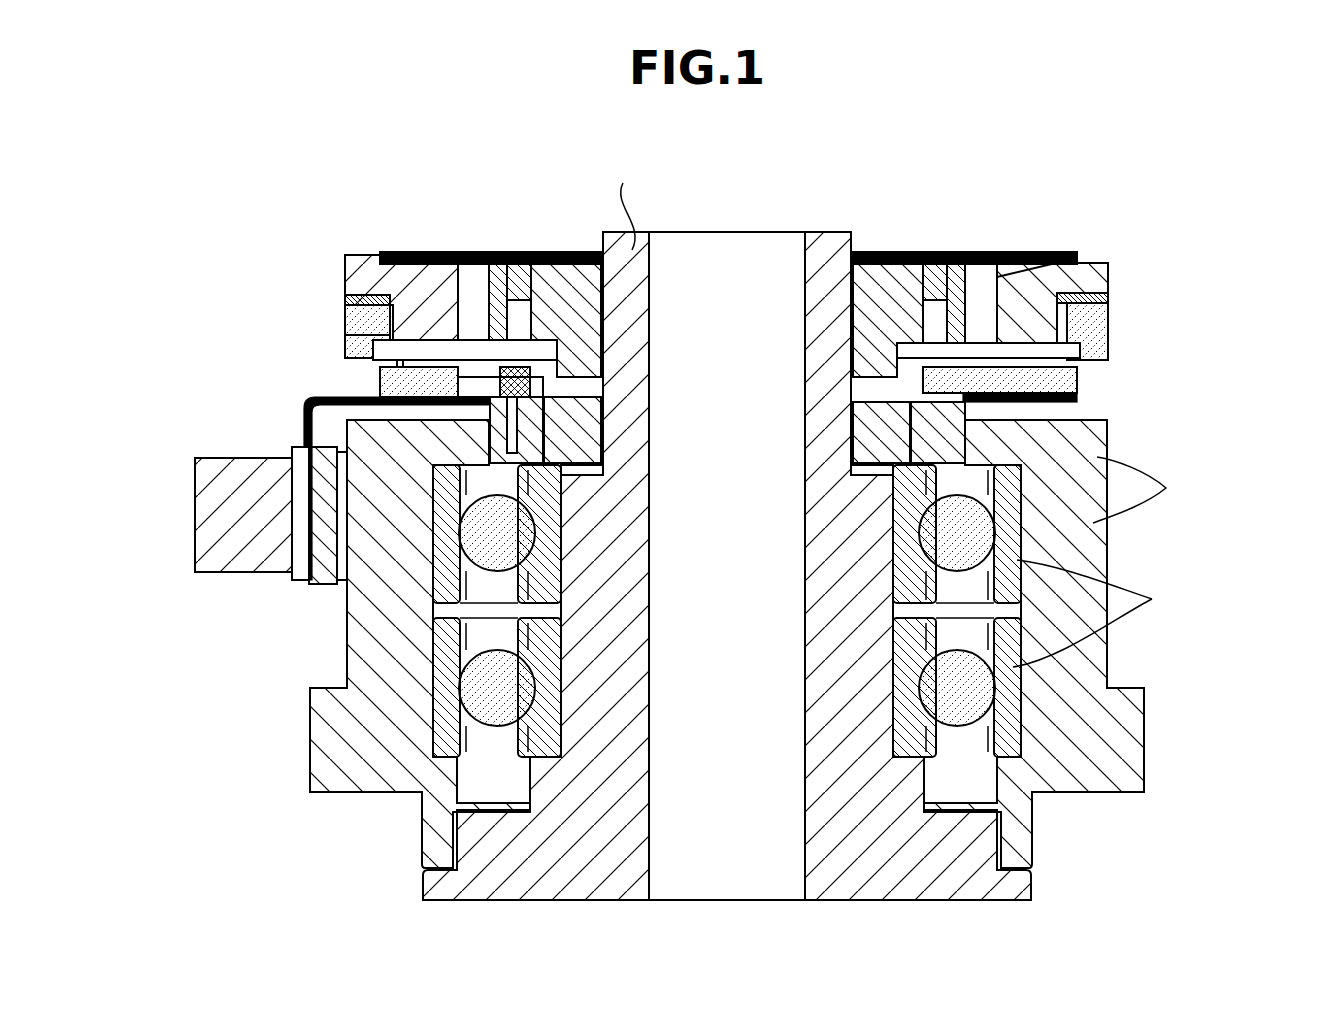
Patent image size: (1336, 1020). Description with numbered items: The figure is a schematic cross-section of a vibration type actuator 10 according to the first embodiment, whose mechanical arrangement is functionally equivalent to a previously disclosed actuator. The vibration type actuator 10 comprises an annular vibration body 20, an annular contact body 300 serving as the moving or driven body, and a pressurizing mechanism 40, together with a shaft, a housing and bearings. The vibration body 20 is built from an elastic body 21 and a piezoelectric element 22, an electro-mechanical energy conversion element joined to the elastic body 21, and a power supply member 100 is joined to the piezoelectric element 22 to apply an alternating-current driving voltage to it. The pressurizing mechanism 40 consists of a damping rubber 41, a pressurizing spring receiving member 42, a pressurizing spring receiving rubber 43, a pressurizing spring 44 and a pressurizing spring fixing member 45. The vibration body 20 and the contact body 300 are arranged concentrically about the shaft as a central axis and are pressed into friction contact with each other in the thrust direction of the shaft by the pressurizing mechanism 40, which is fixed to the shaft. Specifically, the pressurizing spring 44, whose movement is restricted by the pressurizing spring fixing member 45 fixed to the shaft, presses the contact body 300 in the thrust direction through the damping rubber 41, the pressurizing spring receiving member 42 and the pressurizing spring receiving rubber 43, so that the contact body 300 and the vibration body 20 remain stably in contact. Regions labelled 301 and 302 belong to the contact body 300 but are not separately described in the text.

The vibration type actuator 10 is at (396, 140).
The vibration body 20 is at (189, 307).
The elastic body 21 is at (383, 370).
The piezoelectric element 22 is at (382, 381).
The pressurizing mechanism 40 is at (888, 152).
The damping rubber 41 is at (1108, 258).
The pressurizing spring receiving member 42 is at (1093, 277).
The pressurizing spring receiving rubber 43 is at (1055, 266).
The pressurizing spring 44 is at (977, 270).
The pressurizing spring fixing member 45 is at (891, 268).
The power supply member 100 is at (305, 411).
The contact body 300 is at (189, 191).
The rotor magnet 301 is at (360, 317).
The rotor yoke 302 is at (358, 353).